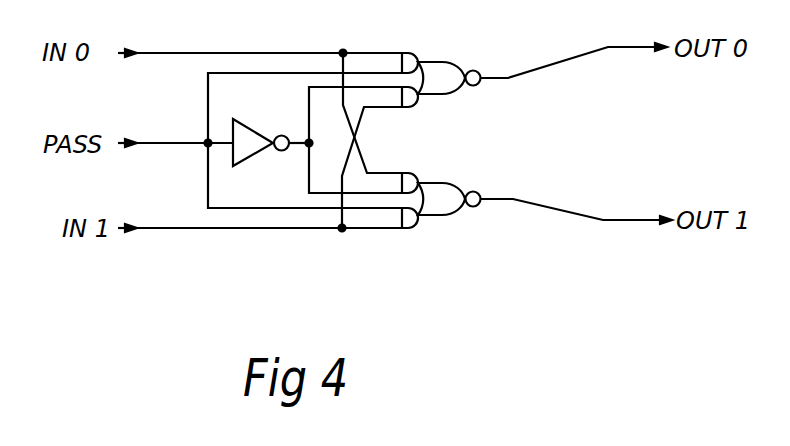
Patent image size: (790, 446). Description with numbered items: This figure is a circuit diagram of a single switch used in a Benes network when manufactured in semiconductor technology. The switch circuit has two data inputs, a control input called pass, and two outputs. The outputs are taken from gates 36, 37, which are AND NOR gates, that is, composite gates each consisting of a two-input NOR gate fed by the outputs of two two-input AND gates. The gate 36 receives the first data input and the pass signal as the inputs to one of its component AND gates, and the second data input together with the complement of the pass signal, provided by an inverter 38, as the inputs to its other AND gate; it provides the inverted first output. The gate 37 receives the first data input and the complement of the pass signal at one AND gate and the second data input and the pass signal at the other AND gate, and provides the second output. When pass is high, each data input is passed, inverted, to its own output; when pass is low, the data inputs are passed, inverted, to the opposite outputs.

The AND NOR gate 36 is at (440, 95).
The AND NOR gate 37 is at (437, 216).
The inverter 38 is at (245, 158).